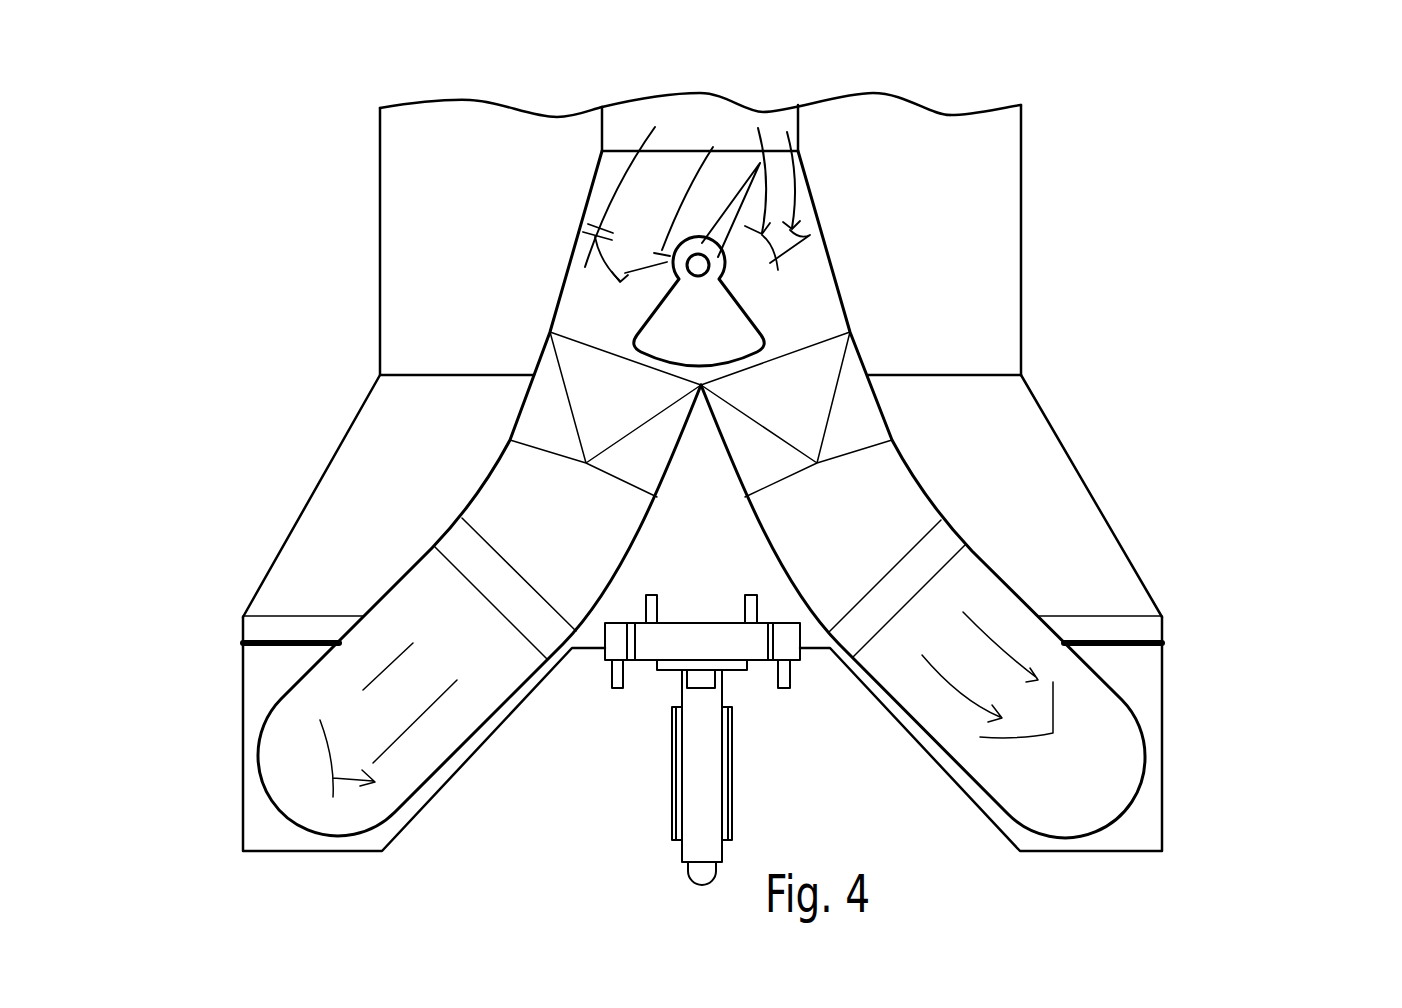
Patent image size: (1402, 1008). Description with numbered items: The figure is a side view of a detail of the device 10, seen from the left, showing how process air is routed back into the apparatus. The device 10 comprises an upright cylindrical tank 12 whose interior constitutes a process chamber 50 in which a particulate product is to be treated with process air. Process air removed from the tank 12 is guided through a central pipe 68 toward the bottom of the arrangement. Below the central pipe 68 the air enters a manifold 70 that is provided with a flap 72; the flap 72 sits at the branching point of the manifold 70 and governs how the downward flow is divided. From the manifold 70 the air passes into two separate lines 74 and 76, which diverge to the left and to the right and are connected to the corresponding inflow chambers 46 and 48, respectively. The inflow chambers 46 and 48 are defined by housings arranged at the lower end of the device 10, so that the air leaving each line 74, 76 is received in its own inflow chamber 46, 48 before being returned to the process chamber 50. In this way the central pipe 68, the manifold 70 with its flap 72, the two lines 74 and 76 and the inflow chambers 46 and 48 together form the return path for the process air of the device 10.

The device 10 is at (1240, 187).
The upright cylindrical tank 12 is at (1023, 128).
The inflow chamber 46 is at (257, 687).
The inflow chamber 48 is at (1130, 685).
The process chamber 50 is at (990, 213).
The central pipe 68 is at (780, 121).
The manifold 70 is at (725, 317).
The flap 72 is at (727, 215).
The line 74 is at (417, 592).
The line 76 is at (992, 600).